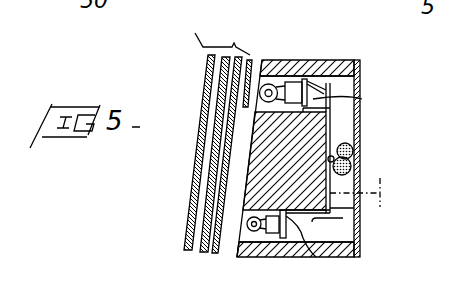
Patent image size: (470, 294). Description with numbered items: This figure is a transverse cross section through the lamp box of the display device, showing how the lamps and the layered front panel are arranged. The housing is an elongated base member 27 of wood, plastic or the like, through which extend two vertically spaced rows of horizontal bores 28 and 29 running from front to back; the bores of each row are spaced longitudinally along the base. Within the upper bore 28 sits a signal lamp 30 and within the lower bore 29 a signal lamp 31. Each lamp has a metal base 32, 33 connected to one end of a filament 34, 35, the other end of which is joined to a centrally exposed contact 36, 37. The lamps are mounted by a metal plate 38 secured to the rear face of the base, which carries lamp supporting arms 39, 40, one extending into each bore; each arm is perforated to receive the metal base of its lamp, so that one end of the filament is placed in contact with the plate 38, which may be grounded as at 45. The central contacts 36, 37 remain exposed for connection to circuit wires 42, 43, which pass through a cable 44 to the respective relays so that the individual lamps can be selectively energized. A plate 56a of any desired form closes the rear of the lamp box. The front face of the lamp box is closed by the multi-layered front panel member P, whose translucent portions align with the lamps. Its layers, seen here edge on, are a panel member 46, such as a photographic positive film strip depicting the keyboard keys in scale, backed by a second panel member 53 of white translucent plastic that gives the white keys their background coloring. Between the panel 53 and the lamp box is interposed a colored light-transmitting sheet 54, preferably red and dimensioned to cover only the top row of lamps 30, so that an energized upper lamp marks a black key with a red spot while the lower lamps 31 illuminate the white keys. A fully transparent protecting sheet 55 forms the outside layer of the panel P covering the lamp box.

The front panel member P is at (208, 37).
The base member 27 is at (246, 184).
The horizontal bore 28 is at (361, 60).
The horizontal bore 29 is at (343, 230).
The signal lamp 30 is at (268, 84).
The signal lamp 31 is at (246, 219).
The metal base 32 is at (290, 80).
The metal base 33 is at (271, 232).
The filament 34 is at (273, 106).
The filament 35 is at (239, 242).
The central contact 36 is at (307, 90).
The central contact 37 is at (287, 238).
The metal plate 38 is at (335, 183).
The lamp supporting arm 39 is at (308, 112).
The lamp supporting arm 40 is at (343, 218).
The circuit wire 42 is at (362, 99).
The circuit wire 43 is at (316, 257).
The cable 44 is at (352, 145).
The ground 45 is at (385, 191).
The panel member 46 is at (216, 118).
The second panel member 53 is at (225, 150).
The colored light-transmitting sheet 54 is at (246, 58).
The protecting transparent sheet 55 is at (204, 89).
The plate 56a is at (361, 81).